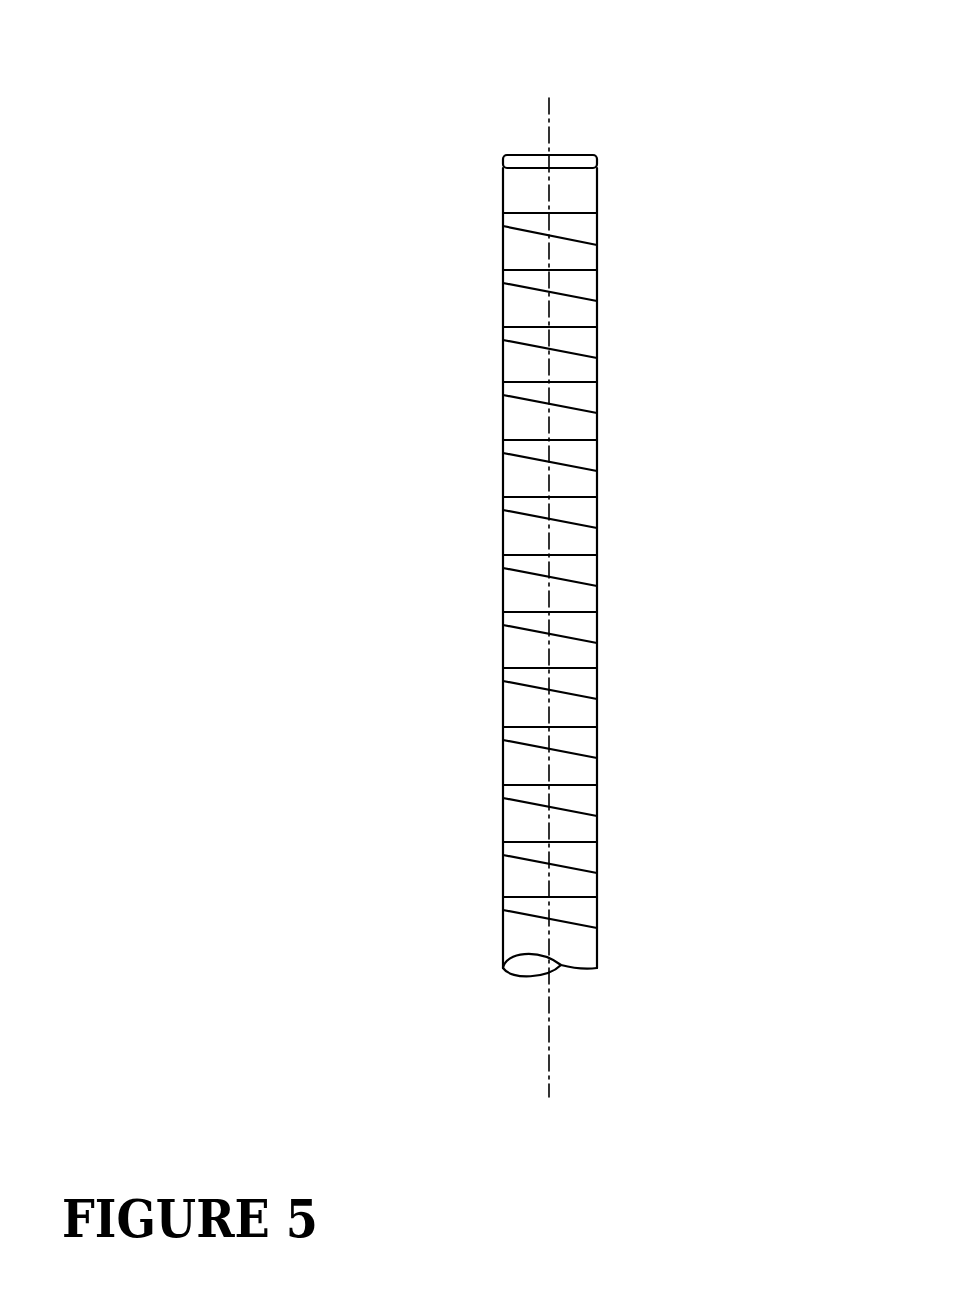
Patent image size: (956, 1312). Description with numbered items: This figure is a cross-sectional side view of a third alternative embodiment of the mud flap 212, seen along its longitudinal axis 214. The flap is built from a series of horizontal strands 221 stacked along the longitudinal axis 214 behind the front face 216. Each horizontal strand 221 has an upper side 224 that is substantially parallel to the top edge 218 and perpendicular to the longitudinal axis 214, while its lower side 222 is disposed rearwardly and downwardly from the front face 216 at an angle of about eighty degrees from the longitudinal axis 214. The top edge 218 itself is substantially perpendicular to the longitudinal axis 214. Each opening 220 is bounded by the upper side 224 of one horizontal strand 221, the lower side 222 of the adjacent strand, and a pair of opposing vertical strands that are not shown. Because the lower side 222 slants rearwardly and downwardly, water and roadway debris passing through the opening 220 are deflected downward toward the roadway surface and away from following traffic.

The catheter shaft assembly 212 is at (518, 553).
The longitudinal axis 214 is at (553, 120).
The front face 216 is at (503, 640).
The top edge 218 is at (510, 153).
The opening 220 is at (518, 303).
The horizontal strand 221 is at (517, 440).
The lower side 222 is at (532, 803).
The upper side 224 is at (530, 783).